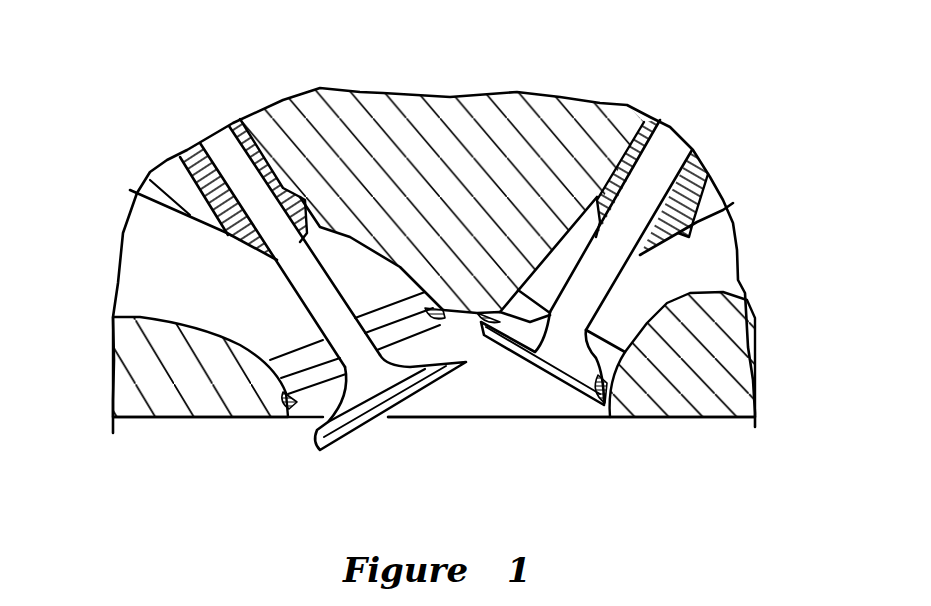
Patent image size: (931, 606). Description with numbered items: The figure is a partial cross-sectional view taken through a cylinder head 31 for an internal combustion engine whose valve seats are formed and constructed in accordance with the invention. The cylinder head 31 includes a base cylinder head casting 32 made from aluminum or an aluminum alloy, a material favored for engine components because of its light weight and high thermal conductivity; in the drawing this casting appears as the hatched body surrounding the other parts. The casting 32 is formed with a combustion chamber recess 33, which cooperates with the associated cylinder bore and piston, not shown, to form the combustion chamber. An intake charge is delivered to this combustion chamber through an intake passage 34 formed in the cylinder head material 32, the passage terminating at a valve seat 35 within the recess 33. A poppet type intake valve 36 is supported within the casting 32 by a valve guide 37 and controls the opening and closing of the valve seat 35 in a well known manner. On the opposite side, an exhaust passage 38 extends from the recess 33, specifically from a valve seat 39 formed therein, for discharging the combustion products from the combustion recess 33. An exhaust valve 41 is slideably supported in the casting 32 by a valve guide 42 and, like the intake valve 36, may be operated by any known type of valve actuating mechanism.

The cylinder head 31 is at (777, 367).
The base cylinder head casting 32 is at (447, 123).
The combustion chamber recess 33 is at (478, 380).
The intake passage 34 is at (153, 287).
The valve seat 35 is at (290, 402).
The intake valve 36 is at (345, 383).
The valve guide 37 is at (194, 157).
The exhaust passage 38 is at (708, 255).
The valve seat 39 is at (608, 385).
The exhaust valve 41 is at (563, 348).
The valve guide 42 is at (653, 137).